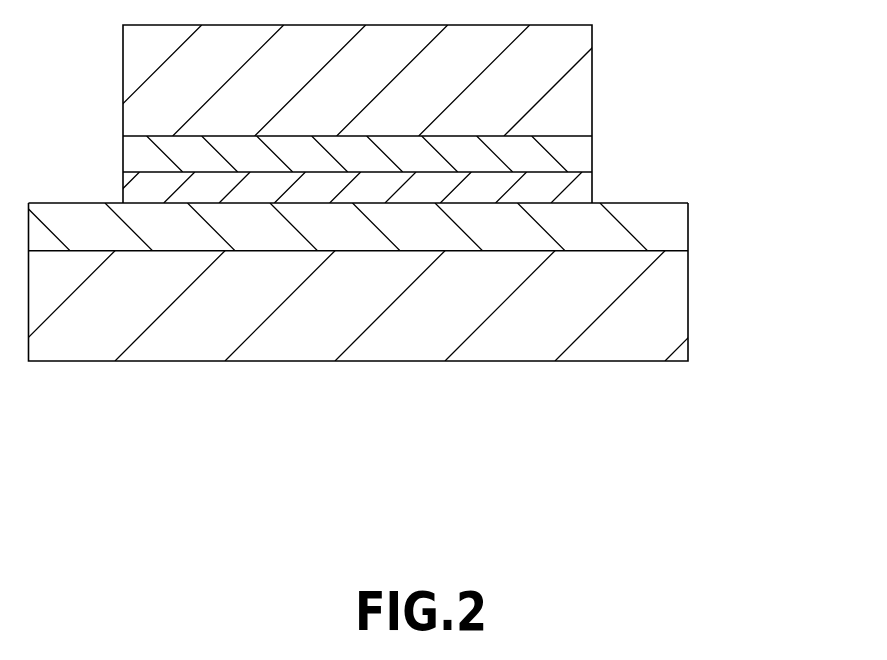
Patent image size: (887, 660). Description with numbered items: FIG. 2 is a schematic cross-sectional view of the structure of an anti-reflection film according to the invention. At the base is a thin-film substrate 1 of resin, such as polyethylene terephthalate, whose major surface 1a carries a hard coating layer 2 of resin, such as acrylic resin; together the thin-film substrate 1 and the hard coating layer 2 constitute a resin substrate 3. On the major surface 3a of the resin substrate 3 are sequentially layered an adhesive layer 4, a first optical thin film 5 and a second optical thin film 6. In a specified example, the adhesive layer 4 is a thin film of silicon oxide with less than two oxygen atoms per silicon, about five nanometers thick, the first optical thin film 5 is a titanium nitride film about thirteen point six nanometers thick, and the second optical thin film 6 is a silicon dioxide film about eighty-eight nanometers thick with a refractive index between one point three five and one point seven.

The thin-film substrate 1 is at (673, 305).
The major surface 1a is at (645, 251).
The hard coating layer 2 is at (673, 220).
The resin substrate 3 is at (792, 185).
The major surface 3a is at (670, 203).
The adhesive layer 4 is at (583, 186).
The first optical thin film 5 is at (581, 156).
The second optical thin film 6 is at (580, 92).